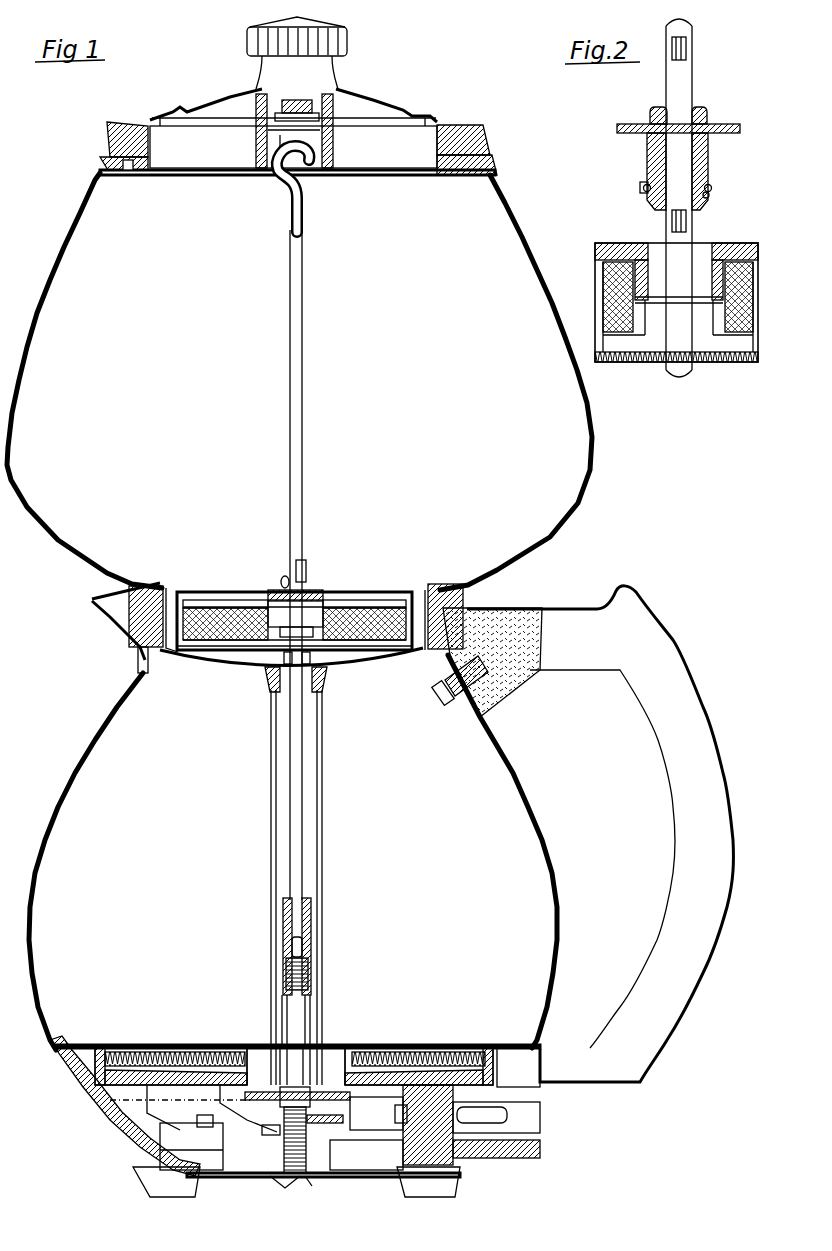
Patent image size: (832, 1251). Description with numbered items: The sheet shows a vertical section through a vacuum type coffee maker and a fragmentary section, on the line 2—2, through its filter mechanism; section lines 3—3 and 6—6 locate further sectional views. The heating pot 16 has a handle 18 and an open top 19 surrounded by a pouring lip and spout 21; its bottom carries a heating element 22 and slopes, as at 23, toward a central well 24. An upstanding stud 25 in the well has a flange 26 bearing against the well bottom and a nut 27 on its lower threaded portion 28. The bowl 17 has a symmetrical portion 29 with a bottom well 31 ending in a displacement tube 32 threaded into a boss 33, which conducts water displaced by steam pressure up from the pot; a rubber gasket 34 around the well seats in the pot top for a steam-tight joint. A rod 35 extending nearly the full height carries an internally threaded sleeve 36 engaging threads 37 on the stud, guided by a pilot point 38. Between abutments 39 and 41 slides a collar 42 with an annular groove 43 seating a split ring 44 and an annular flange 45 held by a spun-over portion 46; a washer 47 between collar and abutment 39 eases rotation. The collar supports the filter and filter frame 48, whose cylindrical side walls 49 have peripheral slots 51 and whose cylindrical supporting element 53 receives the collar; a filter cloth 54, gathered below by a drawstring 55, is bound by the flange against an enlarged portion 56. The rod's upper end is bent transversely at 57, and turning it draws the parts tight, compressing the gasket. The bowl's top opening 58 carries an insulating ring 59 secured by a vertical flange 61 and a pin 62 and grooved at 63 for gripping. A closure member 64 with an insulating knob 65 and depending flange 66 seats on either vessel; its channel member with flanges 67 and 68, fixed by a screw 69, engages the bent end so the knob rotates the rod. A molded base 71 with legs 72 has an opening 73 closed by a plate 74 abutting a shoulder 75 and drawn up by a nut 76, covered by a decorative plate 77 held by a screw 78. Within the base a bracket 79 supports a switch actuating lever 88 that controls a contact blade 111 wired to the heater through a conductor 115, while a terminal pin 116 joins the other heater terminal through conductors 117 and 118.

In FIG. 1, the section line 2— 2 is at (330, 510).
In FIG. 1, the section line 3- 3 is at (20, 1078).
In FIG. 1, the section line 6- 6 is at (337, 1022).
In FIG. 1, the heating or coffee pot 16 is at (78, 747).
In FIG. 1, the coffee container or bowl 17 is at (597, 454).
In FIG. 1, the handle 18 is at (600, 834).
In FIG. 1, the open top 19 is at (153, 675).
In FIG. 1, the pouring lip and spout 21 is at (113, 605).
In FIG. 1, the heating element 22 is at (432, 1048).
In FIG. 1, the sloped bottom portion 23 is at (386, 1048).
In FIG. 1, the central well 24 is at (340, 1048).
In FIG. 1, the upstanding stud 25 is at (285, 1040).
In FIG. 1, the flange 26 is at (292, 1090).
In FIG. 1, the nut 27 is at (268, 1121).
In FIG. 1, the lower threaded portion 28 is at (288, 1160).
In FIG. 1, the symmetrical portion 29 is at (37, 329).
In FIG. 1, the bottom well 31 is at (427, 590).
In FIG. 1, the displacement tube 32 is at (323, 796).
In FIG. 1, the threaded boss 33 is at (327, 680).
In FIG. 1, the gasket 34 is at (466, 601).
In FIG. 1, the rod 35 is at (303, 403).
In FIG. 2, the rod 35 is at (693, 31).
In FIG. 1, the internally threaded sleeve 36 is at (311, 917).
In FIG. 1, the threads 37 is at (309, 972).
In FIG. 1, the pilot point 38 is at (302, 949).
In FIG. 1, the abutment 39 is at (306, 572).
In FIG. 2, the abutment 39 is at (687, 47).
In FIG. 1, the abutment 41 is at (268, 689).
In FIG. 2, the collar 42 is at (709, 154).
In FIG. 2, the annular groove 43 is at (708, 196).
In FIG. 1, the split ring 44 is at (283, 634).
In FIG. 2, the split ring 44 is at (711, 189).
In FIG. 1, the annular flange 45 is at (272, 592).
In FIG. 2, the annular flange 45 is at (718, 123).
In FIG. 1, the spun-over portion 46 is at (283, 586).
In FIG. 2, the spun-over portion 46 is at (659, 109).
In FIG. 2, the washer 47 is at (698, 108).
In FIG. 1, the filter and filter frame 48 is at (368, 590).
In FIG. 2, the filter and filter frame 48 is at (733, 368).
In FIG. 1, the cylindrical side walls 49 is at (228, 608).
In FIG. 1, the peripheral slots 51 is at (200, 612).
In FIG. 1, the cylindrical supporting element 53 is at (294, 624).
In FIG. 2, the cylindrical supporting element 53 is at (635, 268).
In FIG. 2, the filter cloth 54 is at (608, 243).
In FIG. 1, the drawstring 55 is at (384, 660).
In FIG. 2, the drawstring 55 is at (648, 364).
In FIG. 1, the enlarged portion 56 is at (295, 618).
In FIG. 2, the enlarged portion 56 is at (748, 252).
In FIG. 1, the bent end 57 is at (300, 160).
In FIG. 1, the top opening 58 is at (435, 178).
In FIG. 1, the annular ring 59 is at (465, 126).
In FIG. 1, the vertical flange 61 is at (472, 157).
In FIG. 1, the pin 62 is at (128, 172).
In FIG. 1, the annular groove 63 is at (108, 147).
In FIG. 1, the closure member 64 is at (368, 98).
In FIG. 1, the knob 65 is at (247, 40).
In FIG. 1, the depending flange 66 is at (152, 149).
In FIG. 1, the depending flange 67 is at (335, 151).
In FIG. 1, the depending flange 68 is at (255, 170).
In FIG. 1, the screw 69 is at (333, 88).
In FIG. 1, the base 71 is at (84, 1108).
In FIG. 1, the legs 72 is at (150, 1185).
In FIG. 1, the opening 73 is at (191, 1142).
In FIG. 1, the plate 74 is at (360, 1178).
In FIG. 1, the shoulder 75 is at (447, 1181).
In FIG. 1, the nut 76 is at (272, 1179).
In FIG. 1, the decorative plate 77 is at (206, 1180).
In FIG. 1, the screw 78 is at (313, 1180).
In FIG. 1, the bracket 79 is at (352, 1097).
In FIG. 1, the switch actuating lever 88 is at (344, 1118).
In FIG. 1, the contact carrying blade 111 is at (268, 1135).
In FIG. 1, the conductor 115 is at (170, 1112).
In FIG. 1, the second terminal pin 116 is at (495, 1118).
In FIG. 1, the conductor 117 is at (376, 1134).
In FIG. 1, the conductor 118 is at (222, 1091).